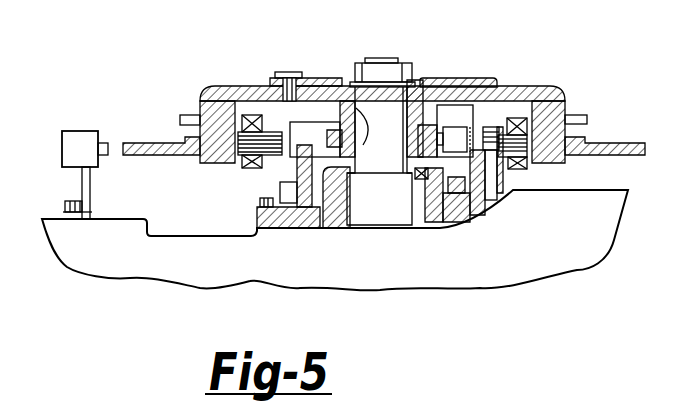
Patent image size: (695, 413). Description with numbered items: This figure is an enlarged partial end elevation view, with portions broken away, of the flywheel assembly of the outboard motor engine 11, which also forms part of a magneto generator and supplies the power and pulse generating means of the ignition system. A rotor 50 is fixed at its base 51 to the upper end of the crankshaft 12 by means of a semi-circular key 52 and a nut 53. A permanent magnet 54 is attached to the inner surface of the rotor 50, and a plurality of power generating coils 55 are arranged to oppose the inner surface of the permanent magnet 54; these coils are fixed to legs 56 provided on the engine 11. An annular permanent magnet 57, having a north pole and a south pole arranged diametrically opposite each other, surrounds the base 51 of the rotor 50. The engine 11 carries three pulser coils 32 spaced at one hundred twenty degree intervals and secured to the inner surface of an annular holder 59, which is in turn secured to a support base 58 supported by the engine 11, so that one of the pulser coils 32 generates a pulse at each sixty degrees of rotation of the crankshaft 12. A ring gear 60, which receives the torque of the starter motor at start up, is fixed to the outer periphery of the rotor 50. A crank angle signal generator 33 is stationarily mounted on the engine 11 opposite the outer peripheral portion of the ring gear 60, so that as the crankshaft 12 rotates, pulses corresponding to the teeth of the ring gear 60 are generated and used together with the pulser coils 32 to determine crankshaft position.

The engine 11 is at (176, 232).
The crankshaft 12 is at (381, 104).
The pulser coils 32 is at (486, 88).
The crank angle signal generator 33 is at (80, 143).
The rotor 50 is at (403, 90).
The base 51 is at (431, 120).
The semi-circular key 52 is at (374, 138).
The nut 53 is at (368, 62).
The permanent magnet 54 is at (566, 102).
The power generating coil 55 is at (522, 168).
The legs 56 is at (505, 177).
The annular permanent magnet 57 is at (454, 137).
The support base 58 is at (305, 163).
The annular holder 59 is at (290, 130).
The ring gear 60 is at (157, 141).